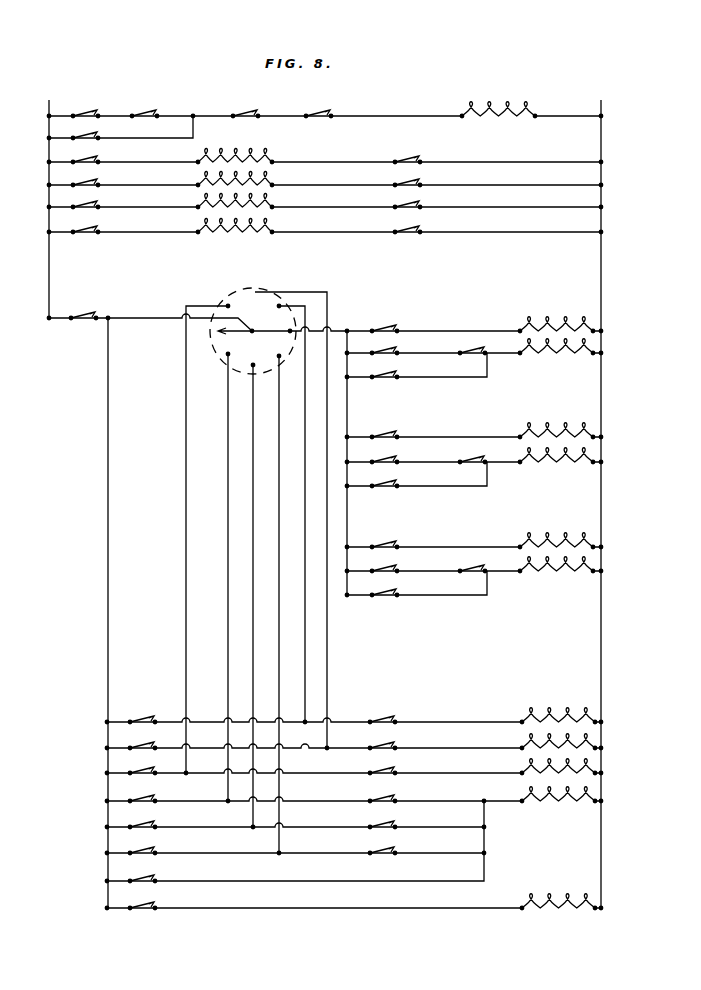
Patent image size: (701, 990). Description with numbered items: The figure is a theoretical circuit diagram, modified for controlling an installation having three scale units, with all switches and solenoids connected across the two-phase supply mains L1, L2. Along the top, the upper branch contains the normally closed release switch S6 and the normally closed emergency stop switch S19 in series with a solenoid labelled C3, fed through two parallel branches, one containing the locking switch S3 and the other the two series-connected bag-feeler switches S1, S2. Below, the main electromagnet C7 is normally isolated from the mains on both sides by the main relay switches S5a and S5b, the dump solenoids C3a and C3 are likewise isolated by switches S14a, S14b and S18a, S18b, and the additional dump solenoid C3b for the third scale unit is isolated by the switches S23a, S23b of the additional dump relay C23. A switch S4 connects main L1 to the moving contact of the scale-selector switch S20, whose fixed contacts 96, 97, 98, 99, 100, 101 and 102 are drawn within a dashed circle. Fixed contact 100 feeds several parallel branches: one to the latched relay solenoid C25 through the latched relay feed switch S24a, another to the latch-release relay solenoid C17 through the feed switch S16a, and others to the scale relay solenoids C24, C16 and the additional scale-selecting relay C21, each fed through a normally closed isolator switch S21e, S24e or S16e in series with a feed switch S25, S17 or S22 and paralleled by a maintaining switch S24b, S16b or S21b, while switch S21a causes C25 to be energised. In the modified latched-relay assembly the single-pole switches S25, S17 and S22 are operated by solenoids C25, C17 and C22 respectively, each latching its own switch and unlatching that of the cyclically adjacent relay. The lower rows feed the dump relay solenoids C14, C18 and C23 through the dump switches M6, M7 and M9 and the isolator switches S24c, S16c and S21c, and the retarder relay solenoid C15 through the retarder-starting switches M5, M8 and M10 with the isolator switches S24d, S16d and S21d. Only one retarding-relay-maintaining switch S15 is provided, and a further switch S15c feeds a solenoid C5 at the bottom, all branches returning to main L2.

The supply main L1 is at (46, 200).
The supply main L2 is at (598, 496).
The bag-feeler switch S1 is at (86, 106).
The bag-feeler switch S2 is at (145, 106).
The emergency stop switch S19 is at (246, 106).
The release switch S6 is at (319, 106).
The dump solenoid C3 is at (272, 204).
The locking switch S3 is at (86, 143).
The main relay switch S5a is at (87, 167).
The dump solenoid isolating switch S14a is at (92, 190).
The dump solenoid isolating switch S18a is at (92, 212).
The dump relay switch S23a is at (92, 237).
The main electromagnet C7 is at (235, 151).
The dump solenoid C3a is at (272, 180).
The additional dump solenoid C3b is at (267, 230).
The main relay switch S5b is at (410, 167).
The dump solenoid isolating switch S14b is at (414, 190).
The dump solenoid isolating switch S18b is at (414, 212).
The dump relay switch S23b is at (414, 237).
The switch S4 is at (84, 308).
The scale-selector switch S20 is at (278, 331).
The selector contact 96 is at (225, 570).
The selector contact 97 is at (281, 304).
The selector contact 98 is at (254, 588).
The selector contact 99 is at (276, 510).
The fixed contact 100 is at (278, 594).
The selector contact 101 is at (280, 358).
The selector contact 102 is at (227, 305).
The latched relay feed switch S24a is at (391, 336).
The single-pole switch S25 is at (386, 358).
The scale relay isolator switch S21e is at (476, 358).
The scale relay maintaining switch S24b is at (391, 382).
The latch-release relay solenoid C17 is at (557, 321).
The scale relay solenoid C24 is at (557, 358).
The latched release relay feed switch S16a is at (391, 442).
The single-pole switch S17 is at (387, 467).
The scale relay isolator switch S24e is at (465, 467).
The scale relay maintaining switch S16b is at (391, 491).
The latched-relay solenoid C22 is at (557, 427).
The scale relay solenoid C16 is at (557, 467).
The scale-selecting relay switch S21a is at (391, 552).
The single-pole switch S22 is at (386, 576).
The scale relay isolator switch S16e is at (475, 576).
The scale-selecting relay switch S21b is at (391, 600).
The latched relay solenoid C25 is at (557, 537).
The scale-selecting relay solenoid C21 is at (557, 577).
The dump relay switch isolator switch S24c is at (146, 728).
The dump relay switch isolator switch S16c is at (146, 753).
The scale-selecting relay switch S21c is at (146, 778).
The retarder relay isolator switch S24d is at (147, 806).
The retarder relay isolator switch S16d is at (147, 832).
The scale-selecting relay switch S21d is at (147, 858).
The retarding-relay-maintaining switch S15 is at (143, 886).
The switch contact S15c is at (146, 913).
The dump switch M6 is at (383, 728).
The dump switch M7 is at (383, 753).
The additional dump switch M9 is at (383, 778).
The retarder relay starter switch M5 is at (383, 806).
The retarder relay starter switch M8 is at (383, 832).
The additional retarder-starting switch M10 is at (384, 858).
The dump relay solenoid C14 is at (523, 718).
The dump relay solenoid C18 is at (523, 744).
The dump relay C23 is at (523, 770).
The retarder relay solenoid C15 is at (523, 798).
The relay coil C5 is at (559, 895).